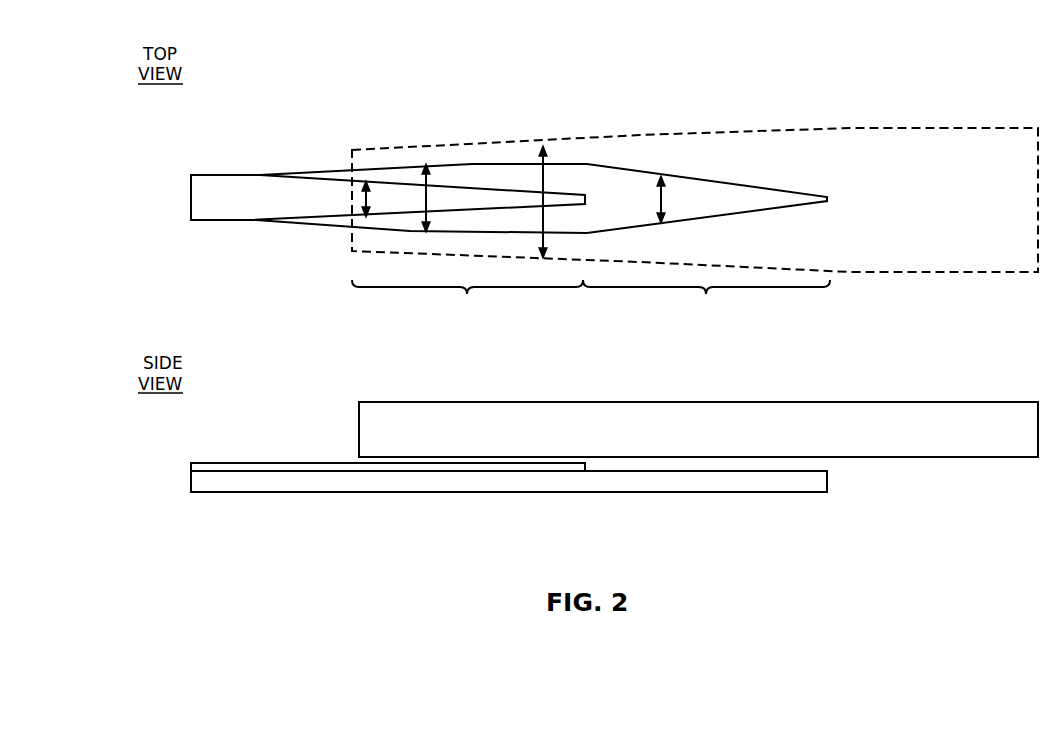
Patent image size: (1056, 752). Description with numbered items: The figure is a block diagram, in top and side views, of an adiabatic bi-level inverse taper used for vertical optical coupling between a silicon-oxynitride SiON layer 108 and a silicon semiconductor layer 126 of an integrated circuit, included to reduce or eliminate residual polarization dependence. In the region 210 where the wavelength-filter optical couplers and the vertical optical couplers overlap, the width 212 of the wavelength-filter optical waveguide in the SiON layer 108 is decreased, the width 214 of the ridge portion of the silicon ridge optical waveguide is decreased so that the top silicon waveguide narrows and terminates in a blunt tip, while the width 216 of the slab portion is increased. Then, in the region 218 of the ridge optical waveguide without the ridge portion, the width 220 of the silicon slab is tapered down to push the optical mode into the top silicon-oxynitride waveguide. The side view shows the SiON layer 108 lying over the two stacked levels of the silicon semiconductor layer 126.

The silicon-oxynitride layer 108 is at (684, 448).
The silicon semiconductor layer 126 is at (292, 533).
The region of overlap 210 is at (467, 311).
The width of wavelength-filter optical waveguide 212 is at (544, 180).
The width of ridge portion 214 is at (363, 195).
The width of slab portion 216 is at (423, 200).
The region without slab portion 218 is at (706, 309).
The width of slab portion in second region 220 is at (662, 198).